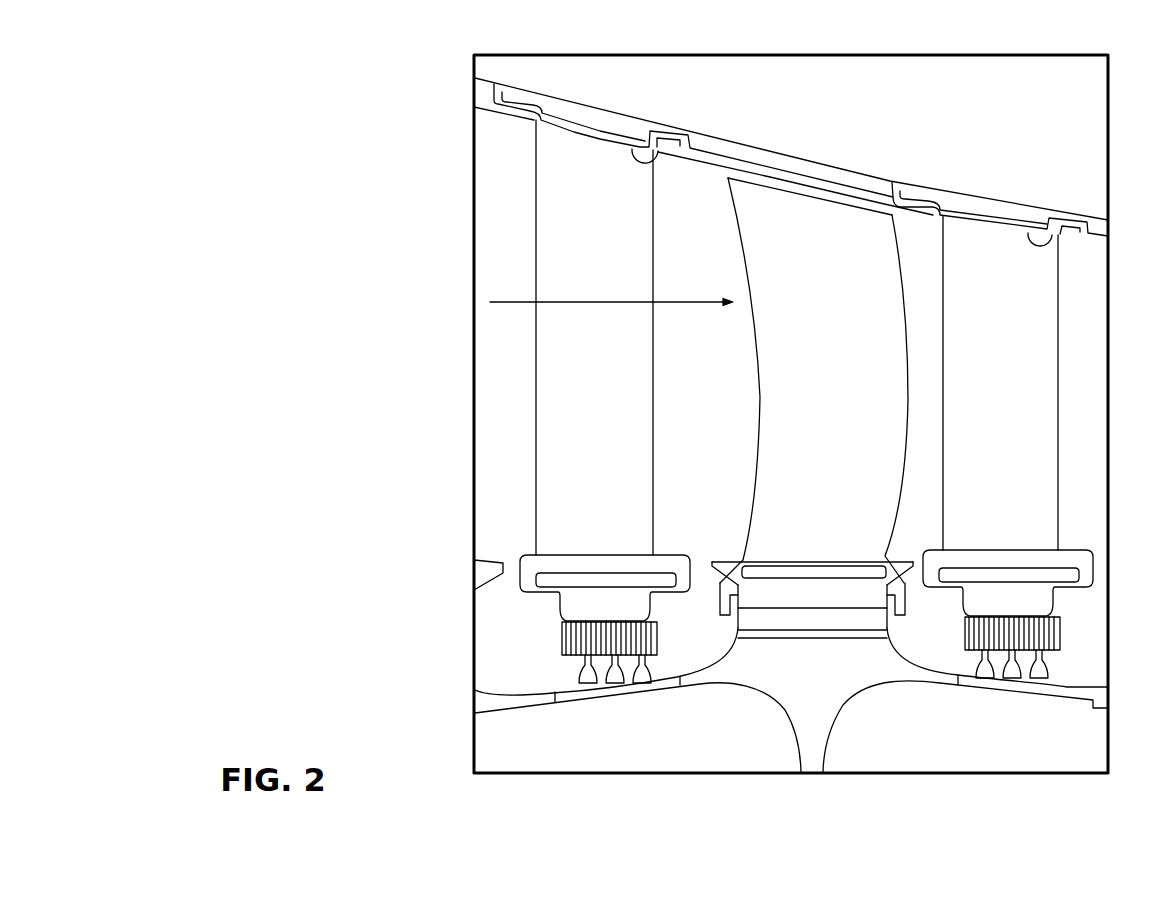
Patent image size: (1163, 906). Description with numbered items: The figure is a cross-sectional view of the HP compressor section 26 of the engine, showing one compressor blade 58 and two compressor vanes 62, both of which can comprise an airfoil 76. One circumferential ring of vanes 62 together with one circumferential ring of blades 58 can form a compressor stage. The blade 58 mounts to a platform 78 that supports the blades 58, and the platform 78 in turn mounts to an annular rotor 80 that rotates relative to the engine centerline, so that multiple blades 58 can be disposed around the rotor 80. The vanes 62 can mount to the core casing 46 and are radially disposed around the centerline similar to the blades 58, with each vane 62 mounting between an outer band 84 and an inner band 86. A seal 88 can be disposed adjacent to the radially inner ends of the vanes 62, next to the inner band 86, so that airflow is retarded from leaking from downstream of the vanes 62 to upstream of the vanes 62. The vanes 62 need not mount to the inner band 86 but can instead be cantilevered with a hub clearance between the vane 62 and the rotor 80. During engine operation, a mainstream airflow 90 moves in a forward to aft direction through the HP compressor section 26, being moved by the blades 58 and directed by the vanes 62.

The HP compressor section 26 is at (623, 88).
The core casing 46 is at (819, 162).
The compressor blade 58 is at (802, 284).
The compressor vane 62 is at (602, 232).
The airfoil 76 is at (810, 235).
The platform 78 is at (794, 562).
The annular rotor 80 is at (808, 680).
The outer band 84 is at (657, 170).
The inner band 86 is at (575, 567).
The seal 88 is at (645, 698).
The mainstream airflow 90 is at (540, 303).